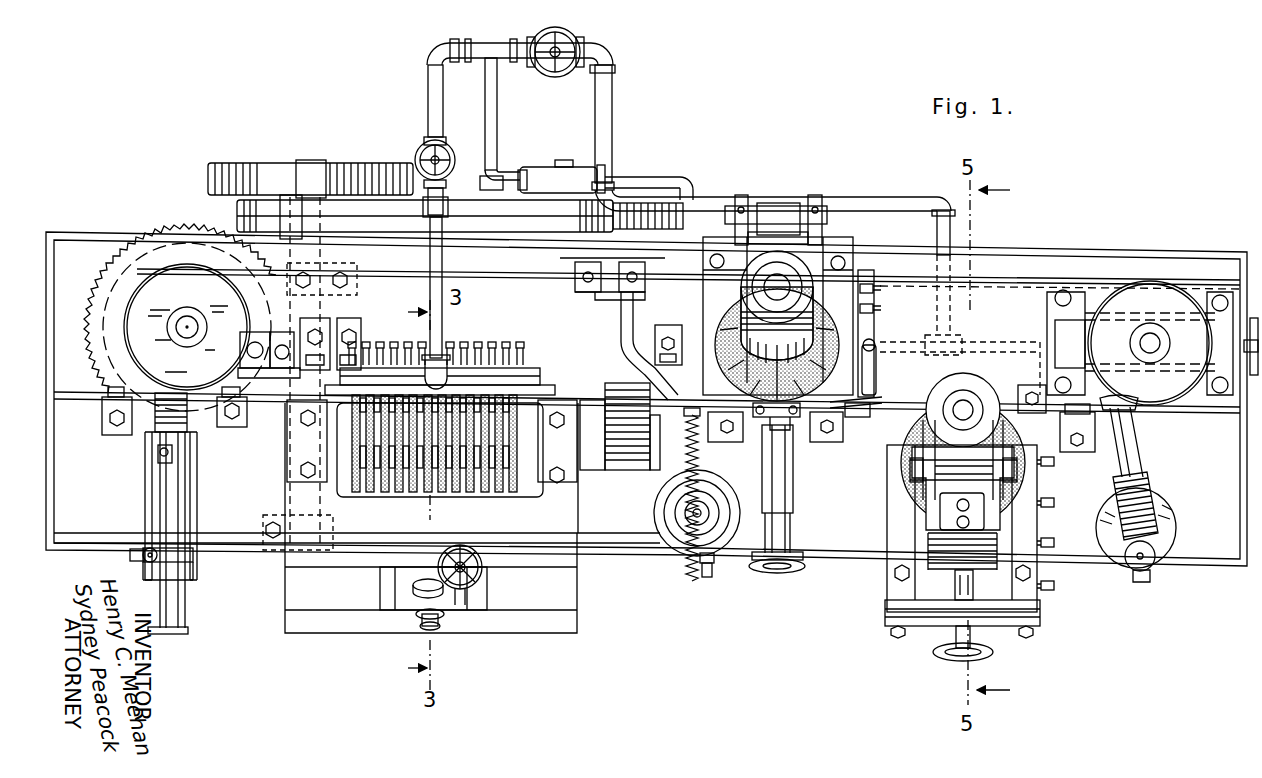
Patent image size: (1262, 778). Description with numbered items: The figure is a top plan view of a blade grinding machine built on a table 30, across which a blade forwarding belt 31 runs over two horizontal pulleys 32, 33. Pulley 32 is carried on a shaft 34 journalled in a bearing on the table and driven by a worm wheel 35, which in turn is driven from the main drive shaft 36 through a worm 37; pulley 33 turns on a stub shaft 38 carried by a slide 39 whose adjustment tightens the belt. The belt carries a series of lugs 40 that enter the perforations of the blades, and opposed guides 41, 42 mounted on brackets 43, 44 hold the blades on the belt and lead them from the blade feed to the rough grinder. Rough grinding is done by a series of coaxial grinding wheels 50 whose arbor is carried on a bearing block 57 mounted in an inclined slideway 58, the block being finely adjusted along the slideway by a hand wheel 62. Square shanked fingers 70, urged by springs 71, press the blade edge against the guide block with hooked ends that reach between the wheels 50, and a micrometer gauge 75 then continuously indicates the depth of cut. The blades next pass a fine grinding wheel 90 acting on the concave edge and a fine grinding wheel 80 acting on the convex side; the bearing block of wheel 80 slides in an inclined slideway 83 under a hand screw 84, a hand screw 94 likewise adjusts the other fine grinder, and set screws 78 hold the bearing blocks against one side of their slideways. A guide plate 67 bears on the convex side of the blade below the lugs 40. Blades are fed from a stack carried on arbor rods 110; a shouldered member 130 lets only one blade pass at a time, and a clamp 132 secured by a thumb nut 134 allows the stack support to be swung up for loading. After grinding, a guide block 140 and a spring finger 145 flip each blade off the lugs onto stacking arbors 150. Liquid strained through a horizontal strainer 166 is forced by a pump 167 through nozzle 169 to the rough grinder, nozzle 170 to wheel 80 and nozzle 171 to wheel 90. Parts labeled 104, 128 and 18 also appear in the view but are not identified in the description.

The table 30 is at (90, 248).
The blade forwarding belt 31 is at (1034, 278).
The horizontal pulley 32 is at (140, 297).
The horizontal pulley 33 is at (1158, 300).
The shaft 34 is at (187, 318).
The worm wheel 35 is at (158, 232).
The main drive shaft 36 is at (306, 162).
The worm 37 is at (345, 305).
The stub shaft 38 is at (1158, 338).
The slide 39 is at (1082, 330).
The lugs 40 is at (998, 277).
The guide 41 is at (270, 385).
The guide 42 is at (290, 392).
The bracket 43 is at (268, 330).
The bracket 44 is at (232, 427).
The grinding wheels 50 is at (510, 490).
The bearing block 57 is at (578, 520).
The slideway 58 is at (580, 626).
The hand wheel 62 is at (483, 565).
The guide plate 67 is at (872, 410).
The square shanked fingers 70 is at (533, 368).
The springs 71 is at (515, 343).
The micrometer gauge 75 is at (716, 482).
The set screws 78 is at (874, 290).
The fine grinding wheel 80 is at (905, 490).
The slideway 83 is at (895, 598).
The hand screw 84 is at (995, 652).
The fine grinding wheel 90 is at (720, 330).
The hand screw 94 is at (758, 575).
The housing 104 is at (818, 197).
The arbor rods 110 is at (160, 487).
The bearing block 128 is at (103, 430).
The shouldered member 130 is at (190, 492).
The clamp 132 is at (195, 555).
The thumb nut 134 is at (143, 550).
The guide block 140 is at (1126, 425).
The spring finger 145 is at (1115, 407).
The stacking arbors 150 is at (1152, 456).
The horizontal strainer 166 is at (612, 108).
The pump 167 is at (545, 170).
The nozzle 169 is at (462, 372).
The nozzle 170 is at (1028, 400).
The nozzle 171 is at (870, 420).
The post 18 is at (790, 422).